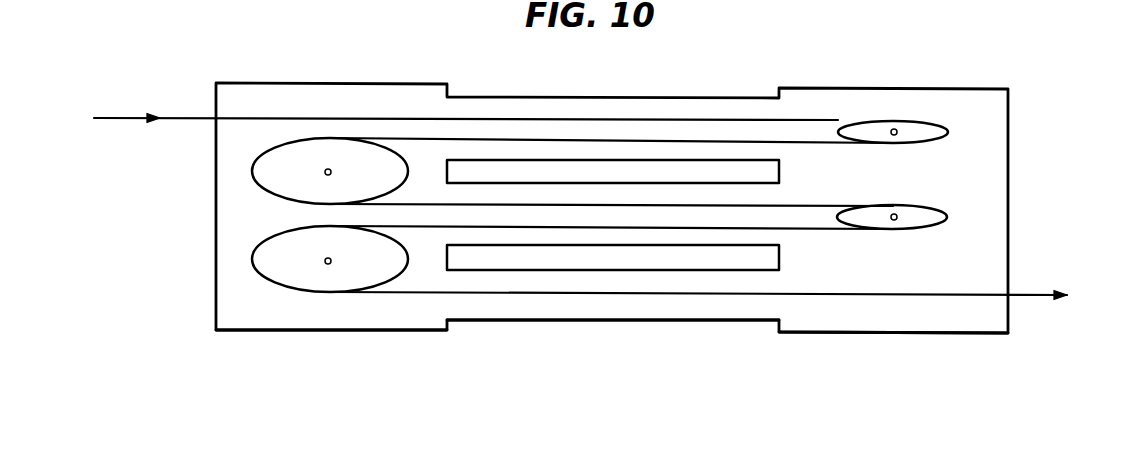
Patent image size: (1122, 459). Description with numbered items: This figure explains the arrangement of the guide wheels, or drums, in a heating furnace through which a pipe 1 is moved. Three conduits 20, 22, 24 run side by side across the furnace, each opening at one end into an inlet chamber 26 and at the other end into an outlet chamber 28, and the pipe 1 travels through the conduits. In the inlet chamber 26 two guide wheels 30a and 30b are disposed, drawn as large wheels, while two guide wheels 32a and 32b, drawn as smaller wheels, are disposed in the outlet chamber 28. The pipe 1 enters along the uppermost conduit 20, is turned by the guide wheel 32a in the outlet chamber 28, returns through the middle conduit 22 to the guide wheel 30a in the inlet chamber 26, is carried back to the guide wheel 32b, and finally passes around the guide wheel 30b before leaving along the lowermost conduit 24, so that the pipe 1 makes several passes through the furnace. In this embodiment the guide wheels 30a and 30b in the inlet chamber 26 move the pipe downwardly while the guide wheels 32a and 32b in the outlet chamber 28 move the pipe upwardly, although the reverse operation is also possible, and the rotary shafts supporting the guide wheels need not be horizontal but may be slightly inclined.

The pipe 1 is at (180, 117).
The conduit 20 is at (608, 105).
The conduit 22 is at (528, 147).
The conduit 24 is at (585, 310).
The inlet chamber 26 is at (402, 332).
The outlet chamber 28 is at (932, 334).
The guide wheel 30a is at (253, 160).
The guide wheel 30b is at (262, 274).
The guide wheel 32a is at (937, 123).
The guide wheel 32b is at (946, 213).